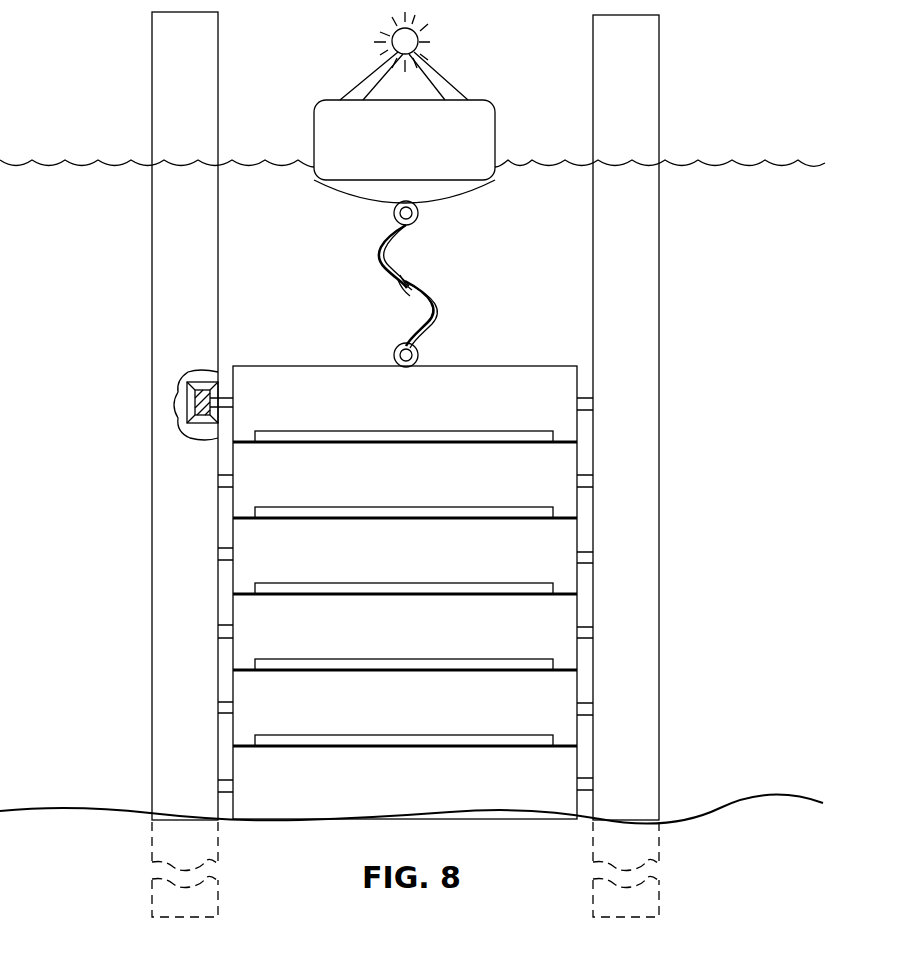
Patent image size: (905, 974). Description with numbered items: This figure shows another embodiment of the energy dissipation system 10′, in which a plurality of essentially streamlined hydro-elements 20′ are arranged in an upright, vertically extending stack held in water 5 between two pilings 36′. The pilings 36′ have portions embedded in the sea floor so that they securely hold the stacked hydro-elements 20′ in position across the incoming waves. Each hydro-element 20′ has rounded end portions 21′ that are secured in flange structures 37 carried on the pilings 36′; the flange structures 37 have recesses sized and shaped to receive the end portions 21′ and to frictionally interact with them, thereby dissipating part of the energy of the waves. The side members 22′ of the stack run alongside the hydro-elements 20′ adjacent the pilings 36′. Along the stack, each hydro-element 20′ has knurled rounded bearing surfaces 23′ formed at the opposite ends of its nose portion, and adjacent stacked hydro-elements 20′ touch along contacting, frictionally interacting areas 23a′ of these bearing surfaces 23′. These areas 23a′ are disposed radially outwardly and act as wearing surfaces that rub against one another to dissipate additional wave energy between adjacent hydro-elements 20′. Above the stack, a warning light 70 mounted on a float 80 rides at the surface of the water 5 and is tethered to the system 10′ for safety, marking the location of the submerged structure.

The pilings 36′ is at (160, 56).
The warning light 70 is at (418, 38).
The float 80 is at (316, 118).
The energy dissipation system 10′ is at (704, 119).
The water 5 is at (58, 542).
The hydro-elements 20′ is at (492, 410).
The rounded end portions 21′ is at (221, 400).
The tray frame side members 22′ is at (577, 386).
The knurled rounded bearing surfaces 23′ is at (236, 596).
The frictionally interacting areas 23a′ is at (287, 790).
The flange structures 37 is at (190, 405).